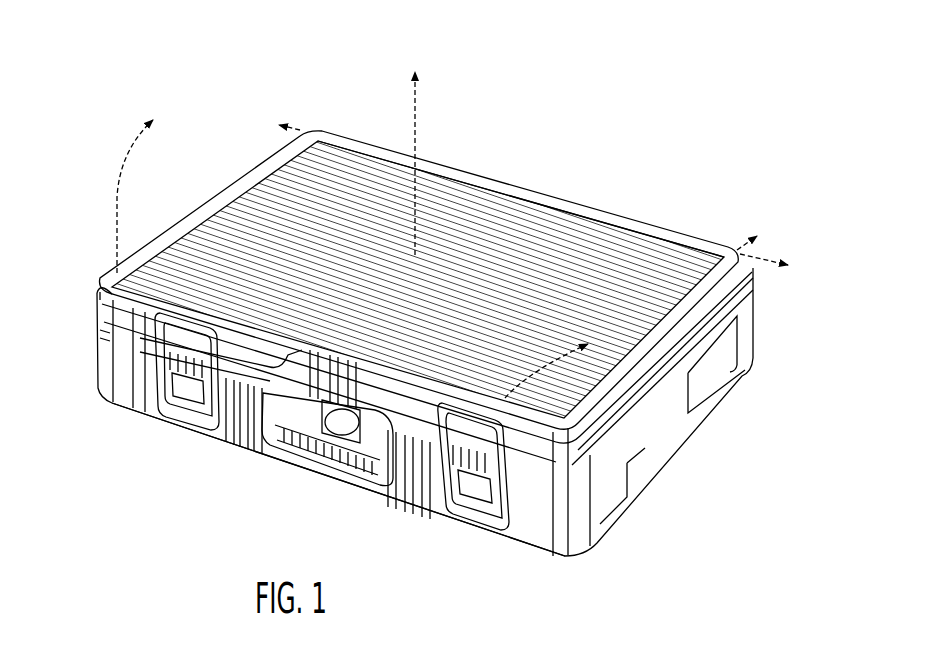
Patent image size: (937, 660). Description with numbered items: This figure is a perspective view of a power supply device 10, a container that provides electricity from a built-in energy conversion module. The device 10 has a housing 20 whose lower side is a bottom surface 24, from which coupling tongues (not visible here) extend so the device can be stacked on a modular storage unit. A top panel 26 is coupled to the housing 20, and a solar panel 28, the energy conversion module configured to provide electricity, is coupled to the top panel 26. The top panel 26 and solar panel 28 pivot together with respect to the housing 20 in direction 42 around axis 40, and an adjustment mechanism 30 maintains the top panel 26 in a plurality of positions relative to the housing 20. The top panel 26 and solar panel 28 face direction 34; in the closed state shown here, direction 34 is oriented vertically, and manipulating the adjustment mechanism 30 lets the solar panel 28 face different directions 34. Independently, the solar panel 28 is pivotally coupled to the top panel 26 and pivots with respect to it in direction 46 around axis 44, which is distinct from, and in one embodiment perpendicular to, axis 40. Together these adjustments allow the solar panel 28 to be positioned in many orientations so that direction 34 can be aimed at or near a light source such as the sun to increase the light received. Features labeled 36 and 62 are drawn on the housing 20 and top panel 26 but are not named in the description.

The power supply device 10 is at (213, 162).
The housing 20 is at (764, 287).
The bottom surface 24 is at (518, 560).
The top panel 26 is at (740, 242).
The solar panel 28 is at (355, 186).
The adjustment mechanism 30 is at (137, 315).
The direction 34 is at (428, 122).
The side pads 36 is at (223, 440).
The axis 40 is at (313, 128).
The direction 42 is at (113, 197).
The axis 44 is at (622, 400).
The direction 46 is at (500, 402).
The top rim edge 62 is at (595, 216).